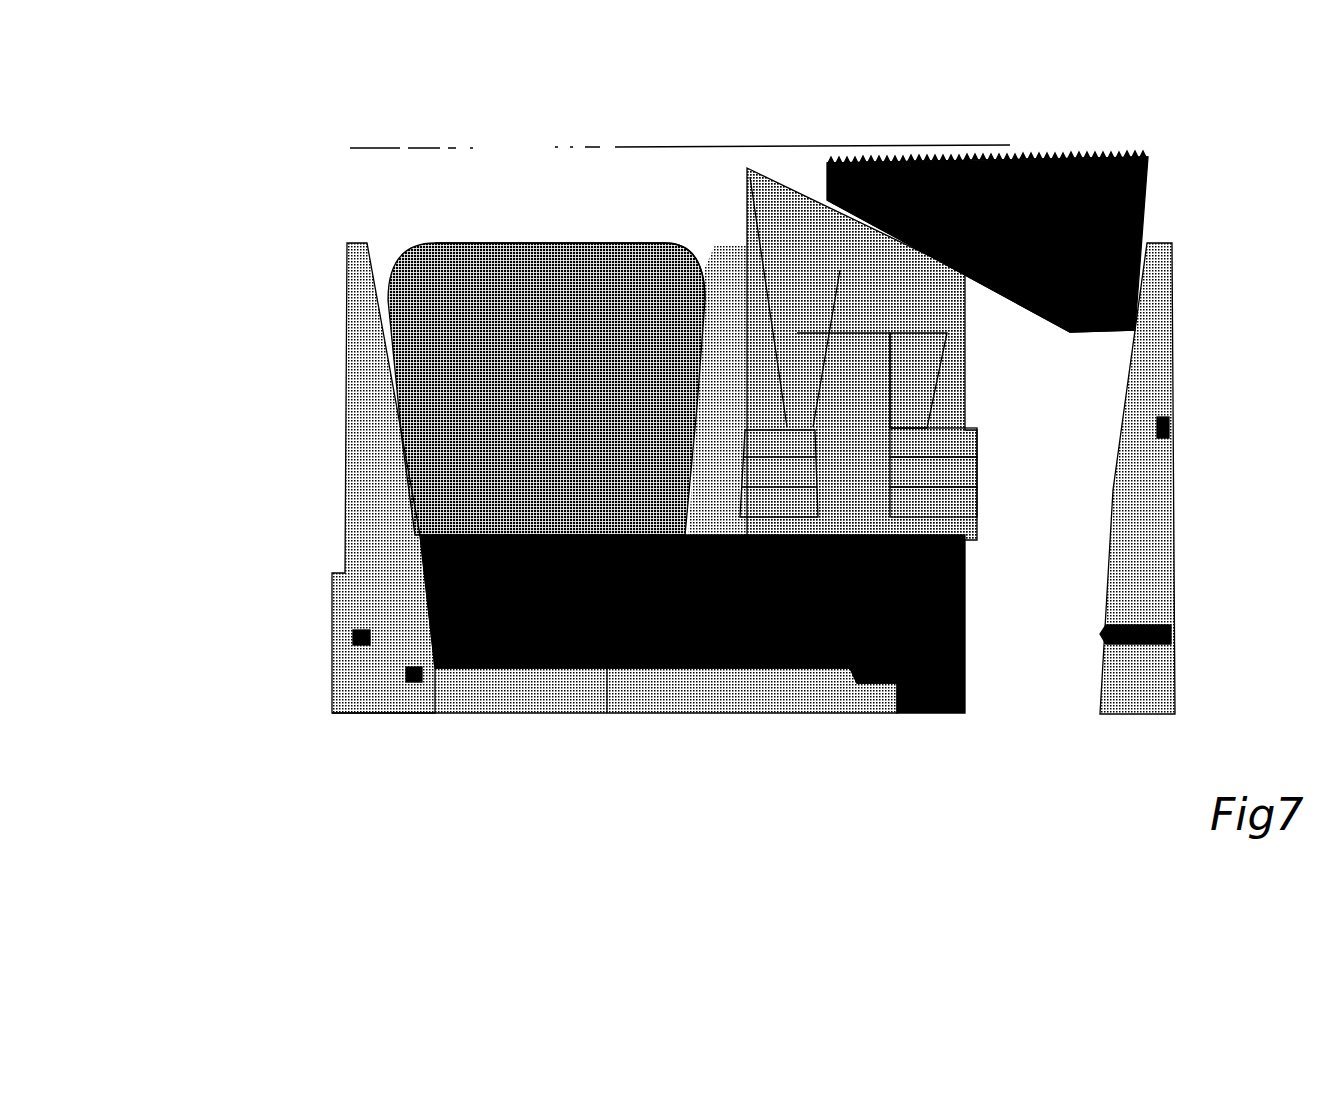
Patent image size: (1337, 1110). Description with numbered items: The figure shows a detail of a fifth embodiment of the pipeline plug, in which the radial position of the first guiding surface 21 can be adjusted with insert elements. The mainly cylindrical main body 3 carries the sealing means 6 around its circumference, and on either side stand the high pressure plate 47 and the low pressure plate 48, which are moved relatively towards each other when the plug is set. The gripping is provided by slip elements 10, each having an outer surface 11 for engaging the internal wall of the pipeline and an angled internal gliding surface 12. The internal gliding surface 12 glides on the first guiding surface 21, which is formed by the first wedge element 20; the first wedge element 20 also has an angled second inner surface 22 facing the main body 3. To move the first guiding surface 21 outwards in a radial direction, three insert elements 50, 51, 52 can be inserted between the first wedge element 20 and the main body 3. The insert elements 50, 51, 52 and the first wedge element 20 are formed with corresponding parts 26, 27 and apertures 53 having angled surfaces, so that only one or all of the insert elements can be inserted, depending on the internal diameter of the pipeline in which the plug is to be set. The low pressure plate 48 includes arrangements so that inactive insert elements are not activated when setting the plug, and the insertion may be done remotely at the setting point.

The main body 3 is at (655, 245).
The sealing means 6 is at (540, 278).
The slip elements 10 is at (1085, 155).
The outer surface 11 is at (1030, 155).
The internal gliding surface 12 is at (1030, 308).
The first wedge element 20 is at (897, 155).
The first guiding surface 21 is at (807, 195).
The second inner surface 22 is at (743, 410).
The corresponding part 26 is at (755, 430).
The corresponding part 27 is at (910, 377).
The high pressure plate 47 is at (355, 493).
The low pressure plate 48 is at (1160, 487).
The insert element 50 is at (960, 437).
The insert element 51 is at (953, 475).
The insert element 52 is at (957, 502).
The apertures 53 is at (870, 490).